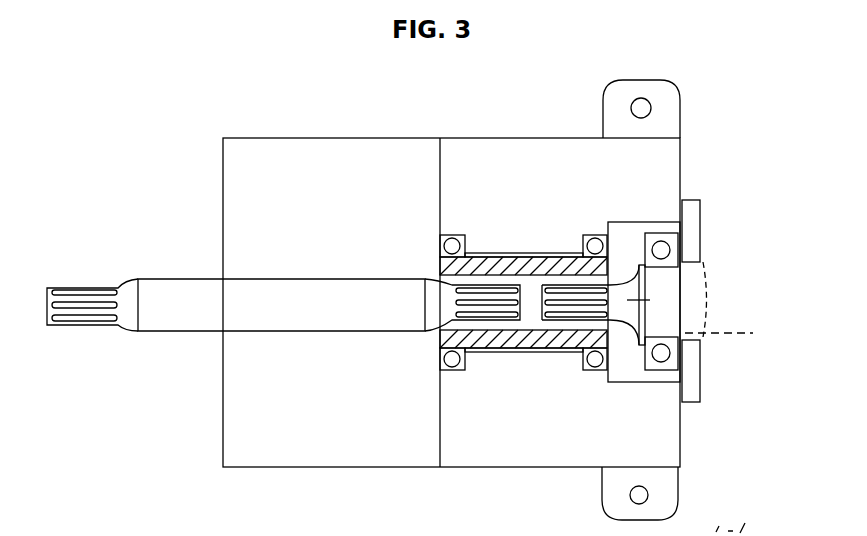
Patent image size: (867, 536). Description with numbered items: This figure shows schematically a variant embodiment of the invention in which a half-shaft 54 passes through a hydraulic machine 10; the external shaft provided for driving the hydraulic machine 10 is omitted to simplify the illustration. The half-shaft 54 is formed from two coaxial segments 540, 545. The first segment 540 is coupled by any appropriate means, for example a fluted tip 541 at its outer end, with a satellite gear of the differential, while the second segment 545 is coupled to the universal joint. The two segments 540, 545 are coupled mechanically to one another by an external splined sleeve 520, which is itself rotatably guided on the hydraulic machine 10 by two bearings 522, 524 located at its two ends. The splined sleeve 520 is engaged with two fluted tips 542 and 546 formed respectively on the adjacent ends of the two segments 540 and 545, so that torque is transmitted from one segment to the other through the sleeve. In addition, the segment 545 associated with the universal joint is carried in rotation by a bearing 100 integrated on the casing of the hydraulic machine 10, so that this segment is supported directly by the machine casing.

The hydraulic machine 10 is at (662, 152).
The half-shaft 54 is at (337, 345).
The segment 540 is at (233, 312).
The fluted tip 541 is at (78, 293).
The fluted tip 542 is at (470, 303).
The fluted tip 546 is at (573, 303).
The external splined sleeve 520 is at (512, 338).
The bearing 522 is at (453, 235).
The bearing 524 is at (595, 235).
The bearing 100 is at (663, 380).
The segment 545 is at (650, 300).